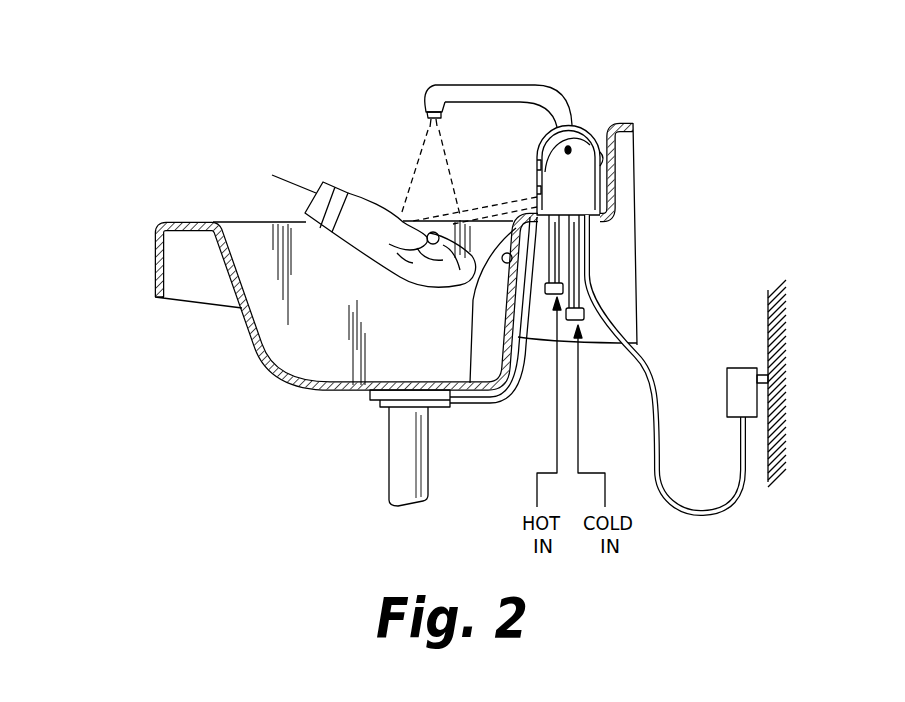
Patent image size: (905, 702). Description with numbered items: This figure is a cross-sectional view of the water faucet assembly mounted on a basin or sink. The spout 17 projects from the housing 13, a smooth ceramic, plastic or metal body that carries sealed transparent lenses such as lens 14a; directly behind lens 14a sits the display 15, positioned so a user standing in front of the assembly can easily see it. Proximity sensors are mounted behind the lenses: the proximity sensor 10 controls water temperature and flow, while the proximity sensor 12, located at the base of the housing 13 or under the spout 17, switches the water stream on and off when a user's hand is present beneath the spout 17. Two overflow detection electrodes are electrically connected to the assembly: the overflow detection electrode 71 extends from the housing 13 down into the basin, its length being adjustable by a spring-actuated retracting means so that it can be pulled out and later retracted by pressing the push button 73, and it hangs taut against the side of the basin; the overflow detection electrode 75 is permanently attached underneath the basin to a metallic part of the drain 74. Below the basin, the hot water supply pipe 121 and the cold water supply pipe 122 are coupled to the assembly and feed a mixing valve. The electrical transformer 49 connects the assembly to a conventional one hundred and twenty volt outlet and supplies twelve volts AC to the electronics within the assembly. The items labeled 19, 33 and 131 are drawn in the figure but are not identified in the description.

The proximity sensor 10 is at (568, 150).
The proximity sensor 12 is at (426, 97).
The housing 13 is at (612, 187).
The lens 14a is at (537, 157).
The display 15 is at (537, 190).
The spout 17 is at (519, 85).
The user's hand 19 is at (278, 178).
The mounting clamp 33 is at (600, 160).
The electrical transformer 49 is at (727, 396).
The overflow detection electrode 71 is at (483, 301).
The push button 73 is at (537, 200).
The drain 74 is at (389, 437).
The overflow detection electrode 75 is at (479, 408).
The hot water supply pipe 121 is at (563, 288).
The cold water supply pipe 122 is at (582, 315).
The aerator outlet 131 is at (430, 130).